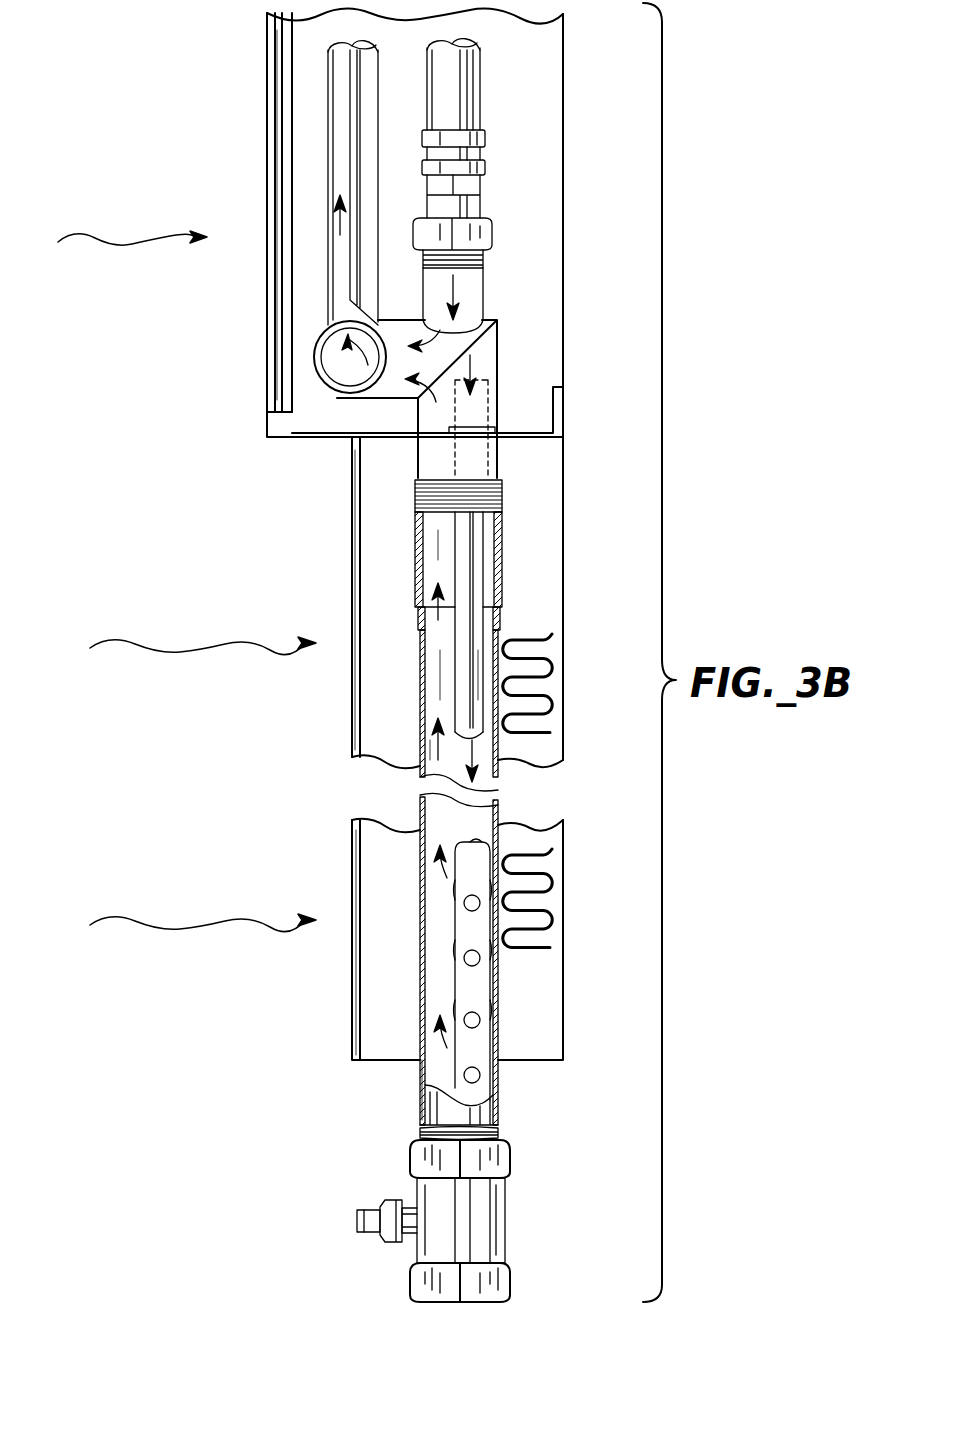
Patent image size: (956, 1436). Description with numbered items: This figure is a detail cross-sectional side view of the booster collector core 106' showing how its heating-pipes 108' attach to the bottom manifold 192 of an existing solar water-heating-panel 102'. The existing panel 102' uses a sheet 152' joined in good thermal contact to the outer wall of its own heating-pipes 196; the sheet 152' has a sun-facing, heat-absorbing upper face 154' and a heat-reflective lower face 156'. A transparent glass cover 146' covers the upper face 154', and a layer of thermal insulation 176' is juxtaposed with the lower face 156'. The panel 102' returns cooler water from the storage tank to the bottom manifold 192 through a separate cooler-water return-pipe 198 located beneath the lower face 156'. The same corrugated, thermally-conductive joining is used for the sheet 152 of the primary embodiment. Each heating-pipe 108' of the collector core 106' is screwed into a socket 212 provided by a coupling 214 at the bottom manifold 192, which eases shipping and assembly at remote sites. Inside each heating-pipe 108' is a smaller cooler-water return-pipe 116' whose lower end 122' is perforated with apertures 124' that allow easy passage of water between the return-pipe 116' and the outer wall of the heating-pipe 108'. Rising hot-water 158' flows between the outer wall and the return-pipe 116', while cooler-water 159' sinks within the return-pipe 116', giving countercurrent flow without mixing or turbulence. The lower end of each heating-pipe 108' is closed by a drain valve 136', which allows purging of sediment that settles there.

The existing solar water-heating-panel 102' is at (456, 534).
The transparent glass cover 146' is at (272, 390).
The sheet 152 is at (295, 183).
The cooler-water return-pipe 198 is at (482, 92).
The heating-pipes 196 is at (325, 270).
The bottom manifold 192 is at (315, 352).
The coupling 214 is at (497, 520).
The socket 212 is at (500, 620).
The lower face 156' is at (536, 625).
The cooler-water 159' is at (369, 557).
The sheet 152' is at (351, 681).
The upper face 154' is at (376, 681).
The cooler-water return-pipe 116' is at (518, 837).
The lower end 122' is at (522, 970).
The apertures 124' is at (557, 998).
The thermal insulation 176' is at (564, 791).
The hot-water 158' is at (383, 768).
The collector core 106' is at (357, 942).
The heating-pipe 108' is at (376, 1090).
The drain valve 136' is at (467, 1215).